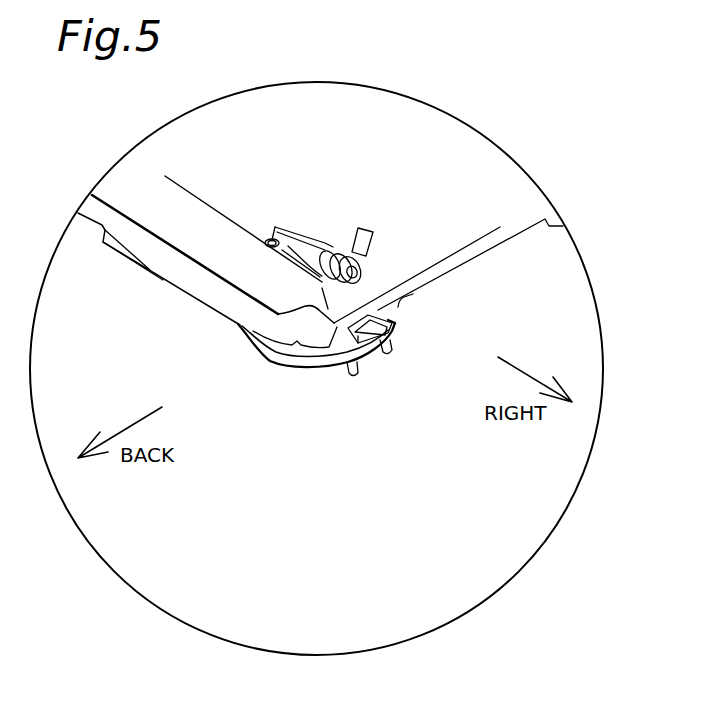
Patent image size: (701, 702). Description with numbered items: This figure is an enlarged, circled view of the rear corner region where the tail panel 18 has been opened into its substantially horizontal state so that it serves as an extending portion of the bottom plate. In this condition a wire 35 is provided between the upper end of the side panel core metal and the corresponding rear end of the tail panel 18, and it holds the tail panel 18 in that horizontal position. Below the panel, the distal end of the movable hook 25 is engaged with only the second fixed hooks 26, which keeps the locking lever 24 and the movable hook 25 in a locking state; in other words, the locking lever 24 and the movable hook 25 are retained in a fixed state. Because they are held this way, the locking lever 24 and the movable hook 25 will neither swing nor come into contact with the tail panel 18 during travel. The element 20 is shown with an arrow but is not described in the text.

The tail panel 18 is at (420, 240).
The frame member 20 is at (302, 437).
The locking lever 24 is at (128, 262).
The movable hook 25 is at (266, 370).
The second fixed hooks 26 is at (352, 374).
The wire 35 is at (358, 233).